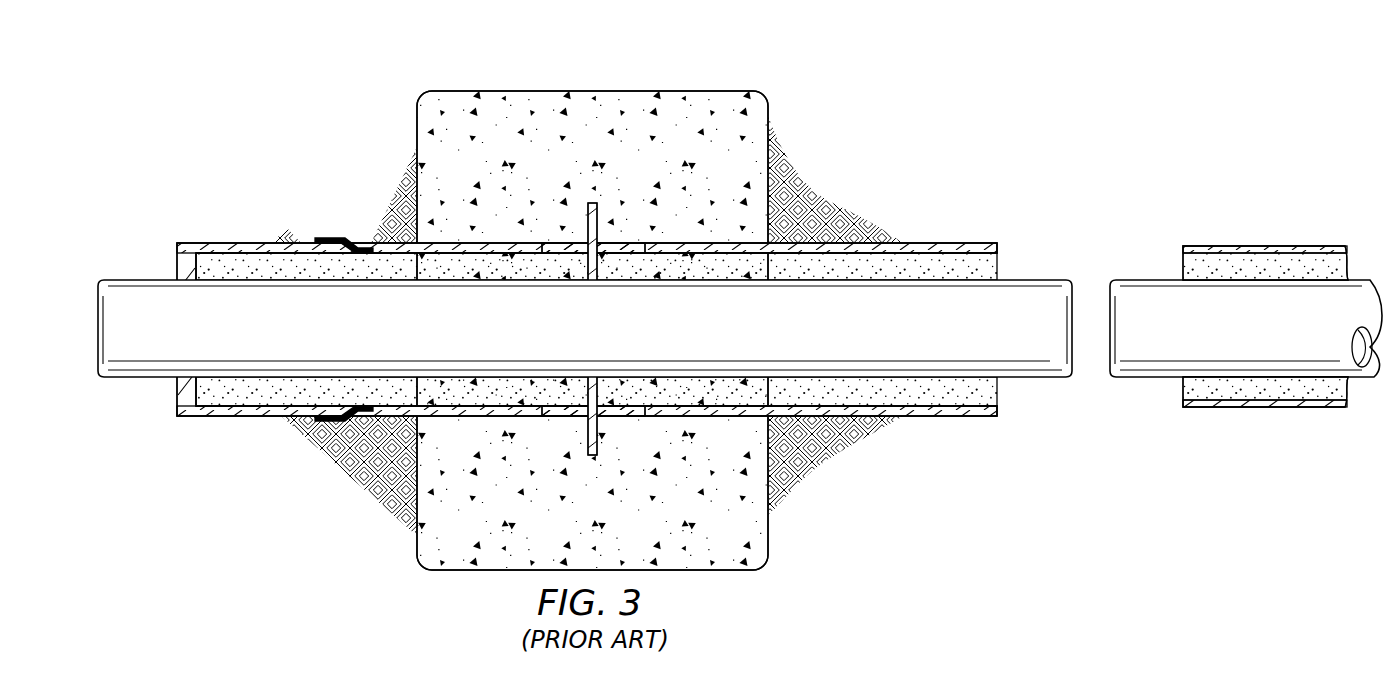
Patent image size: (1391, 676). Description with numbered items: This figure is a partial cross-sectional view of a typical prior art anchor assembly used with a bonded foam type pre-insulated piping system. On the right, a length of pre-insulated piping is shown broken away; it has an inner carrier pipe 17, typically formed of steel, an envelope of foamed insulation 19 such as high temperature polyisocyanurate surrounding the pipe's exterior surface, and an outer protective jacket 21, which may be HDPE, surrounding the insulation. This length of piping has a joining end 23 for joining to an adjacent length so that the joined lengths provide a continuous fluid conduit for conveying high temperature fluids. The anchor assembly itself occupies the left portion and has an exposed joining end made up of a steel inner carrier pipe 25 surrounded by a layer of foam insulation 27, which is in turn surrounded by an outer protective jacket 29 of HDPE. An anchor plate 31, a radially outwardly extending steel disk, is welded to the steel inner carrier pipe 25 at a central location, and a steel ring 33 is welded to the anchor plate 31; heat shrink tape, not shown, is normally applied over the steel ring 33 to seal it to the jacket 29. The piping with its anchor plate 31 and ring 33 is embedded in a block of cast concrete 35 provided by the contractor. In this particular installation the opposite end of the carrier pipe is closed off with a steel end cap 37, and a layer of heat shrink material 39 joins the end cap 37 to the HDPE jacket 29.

The inner carrier pipe 17 is at (1152, 279).
The envelope of foamed insulation 19 is at (1220, 408).
The outer protective jacket 21 is at (1285, 246).
The joining end 23 is at (1099, 367).
The steel inner carrier pipe 25 is at (1025, 279).
The layer of foam insulation 27 is at (945, 266).
The outer protective jacket 29 is at (968, 408).
The anchor plate 31 is at (592, 456).
The steel ring 33 is at (626, 243).
The block of cast concrete 35 is at (463, 90).
The steel end cap 37 is at (205, 243).
The layer of heat shrink material 39 is at (325, 239).